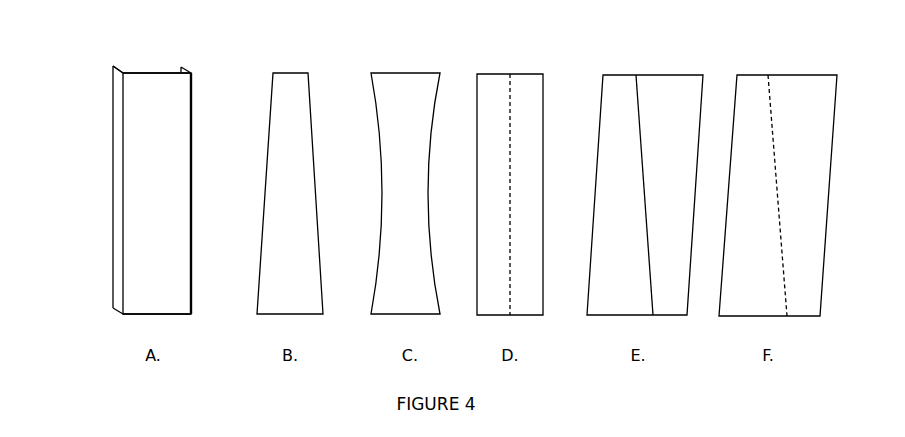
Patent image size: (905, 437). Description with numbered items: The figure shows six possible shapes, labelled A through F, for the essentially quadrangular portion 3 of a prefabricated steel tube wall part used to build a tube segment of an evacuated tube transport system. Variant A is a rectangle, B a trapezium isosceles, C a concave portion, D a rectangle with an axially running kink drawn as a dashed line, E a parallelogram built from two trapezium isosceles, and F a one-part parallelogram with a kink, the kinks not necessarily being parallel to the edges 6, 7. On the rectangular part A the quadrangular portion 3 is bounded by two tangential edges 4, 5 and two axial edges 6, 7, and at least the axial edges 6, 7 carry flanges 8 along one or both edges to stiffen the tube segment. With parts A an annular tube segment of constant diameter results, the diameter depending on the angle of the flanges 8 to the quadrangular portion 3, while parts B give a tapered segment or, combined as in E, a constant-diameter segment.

The quadrangular portion 3 is at (151, 206).
The tangential edge 4 is at (157, 72).
The tangential edge 5 is at (131, 316).
The axial edge 6 is at (193, 140).
The axial edge 7 is at (112, 156).
The flange 8 is at (192, 67).